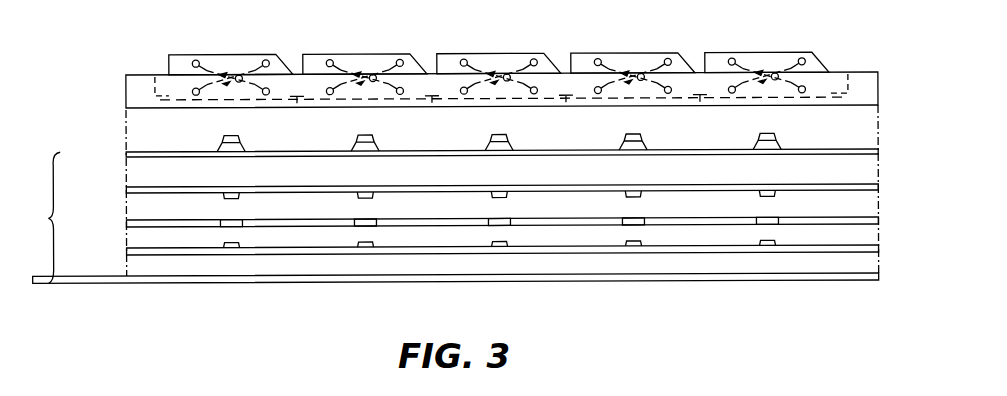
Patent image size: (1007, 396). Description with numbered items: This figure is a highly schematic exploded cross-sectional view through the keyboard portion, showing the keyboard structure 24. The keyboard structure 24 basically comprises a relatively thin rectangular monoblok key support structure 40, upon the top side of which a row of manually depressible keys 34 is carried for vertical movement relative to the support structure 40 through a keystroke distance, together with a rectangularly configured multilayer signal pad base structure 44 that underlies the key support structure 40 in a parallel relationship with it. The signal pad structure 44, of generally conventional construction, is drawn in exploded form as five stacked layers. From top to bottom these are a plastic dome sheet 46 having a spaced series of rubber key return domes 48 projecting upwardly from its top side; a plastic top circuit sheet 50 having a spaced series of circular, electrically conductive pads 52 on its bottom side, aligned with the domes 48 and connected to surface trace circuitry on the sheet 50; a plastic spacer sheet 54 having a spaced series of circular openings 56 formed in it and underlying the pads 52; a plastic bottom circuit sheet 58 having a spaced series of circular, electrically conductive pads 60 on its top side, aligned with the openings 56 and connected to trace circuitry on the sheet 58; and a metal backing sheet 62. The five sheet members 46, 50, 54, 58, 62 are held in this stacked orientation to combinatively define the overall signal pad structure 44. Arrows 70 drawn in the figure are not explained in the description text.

The keyboard structure 24 is at (140, 40).
The manually depressible keys 34 is at (250, 55).
The key support structure 40 is at (858, 65).
The signal pad base structure 44 is at (43, 217).
The dome sheet 46 is at (126, 154).
The key return domes 48 is at (244, 137).
The top circuit sheet 50 is at (126, 190).
The electrically conductive pads 52 is at (229, 199).
The spacer sheet 54 is at (126, 224).
The circular openings 56 is at (233, 219).
The bottom circuit sheet 58 is at (126, 252).
The electrically conductive pads 60 is at (236, 243).
The metal backing sheet 62 is at (33, 284).
The hidden interconnect (arrow) 70 is at (222, 97).